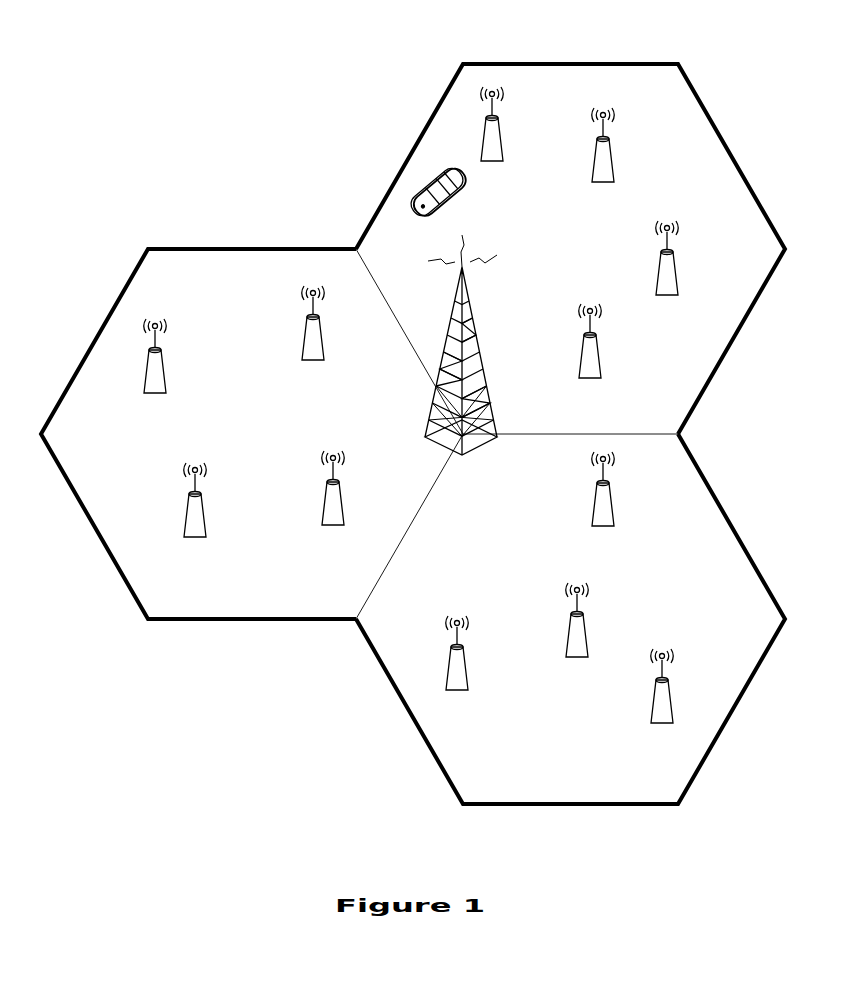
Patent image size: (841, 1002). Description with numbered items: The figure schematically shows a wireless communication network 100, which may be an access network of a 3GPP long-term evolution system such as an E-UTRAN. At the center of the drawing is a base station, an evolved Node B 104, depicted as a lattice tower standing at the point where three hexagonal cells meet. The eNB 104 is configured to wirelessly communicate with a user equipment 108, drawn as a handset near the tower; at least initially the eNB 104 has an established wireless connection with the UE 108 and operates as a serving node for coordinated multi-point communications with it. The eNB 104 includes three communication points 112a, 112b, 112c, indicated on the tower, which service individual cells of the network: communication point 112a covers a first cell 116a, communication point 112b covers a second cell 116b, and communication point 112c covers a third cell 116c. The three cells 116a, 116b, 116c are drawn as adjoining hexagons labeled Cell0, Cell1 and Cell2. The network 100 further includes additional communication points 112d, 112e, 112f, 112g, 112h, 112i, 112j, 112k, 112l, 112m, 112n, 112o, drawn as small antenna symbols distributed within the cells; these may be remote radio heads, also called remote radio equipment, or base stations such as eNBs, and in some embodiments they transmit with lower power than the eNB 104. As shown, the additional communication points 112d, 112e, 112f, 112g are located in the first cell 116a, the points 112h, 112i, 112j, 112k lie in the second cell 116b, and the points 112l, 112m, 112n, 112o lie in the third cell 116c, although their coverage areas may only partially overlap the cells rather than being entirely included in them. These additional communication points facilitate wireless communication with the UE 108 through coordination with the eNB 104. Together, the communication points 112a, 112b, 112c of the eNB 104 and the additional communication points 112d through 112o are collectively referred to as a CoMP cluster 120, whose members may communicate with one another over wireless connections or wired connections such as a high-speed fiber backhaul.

The wireless communication network 100 is at (185, 118).
The evolved Node B 104 is at (440, 383).
The user equipment 108 is at (428, 190).
The communication point 112a is at (484, 353).
The communication point 112b is at (425, 377).
The communication point 112c is at (484, 400).
The additional communication point 112d is at (479, 138).
The additional communication point 112e is at (594, 158).
The additional communication point 112f is at (656, 262).
The additional communication point 112g is at (600, 360).
The additional communication point 112h is at (170, 372).
The additional communication point 112i is at (298, 333).
The additional communication point 112j is at (183, 515).
The additional communication point 112k is at (318, 503).
The additional communication point 112l is at (590, 503).
The additional communication point 112m is at (470, 680).
The additional communication point 112n is at (566, 634).
The additional communication point 112o is at (650, 702).
The first cell 116a is at (697, 190).
The second cell 116b is at (135, 454).
The third cell 116c is at (510, 554).
The CoMP cluster 120 is at (568, 63).